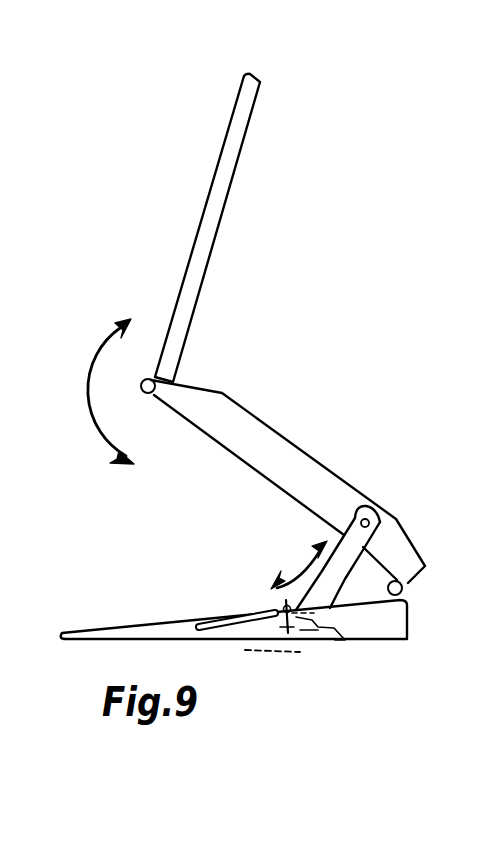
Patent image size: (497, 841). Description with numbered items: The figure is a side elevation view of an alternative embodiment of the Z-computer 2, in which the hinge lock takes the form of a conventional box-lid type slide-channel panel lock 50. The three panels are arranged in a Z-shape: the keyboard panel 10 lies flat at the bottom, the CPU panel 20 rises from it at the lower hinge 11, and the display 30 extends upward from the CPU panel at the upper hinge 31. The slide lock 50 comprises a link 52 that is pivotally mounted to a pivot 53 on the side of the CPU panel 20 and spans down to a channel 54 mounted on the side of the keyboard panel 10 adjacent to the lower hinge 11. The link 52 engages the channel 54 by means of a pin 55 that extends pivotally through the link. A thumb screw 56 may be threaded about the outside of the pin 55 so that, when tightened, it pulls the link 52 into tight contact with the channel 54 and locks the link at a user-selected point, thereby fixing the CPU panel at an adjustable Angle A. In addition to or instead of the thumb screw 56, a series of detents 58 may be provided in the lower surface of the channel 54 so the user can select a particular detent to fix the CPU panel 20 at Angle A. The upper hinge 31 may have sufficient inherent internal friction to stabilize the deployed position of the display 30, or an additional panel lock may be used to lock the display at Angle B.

The Z-computer 2 is at (249, 369).
The keyboard panel 10 is at (153, 619).
The lower hinge 11 is at (404, 588).
The CPU panel 20 is at (286, 471).
The display 30 is at (215, 235).
The upper hinge 31 is at (141, 386).
The slide-channel type panel lock 50 is at (303, 528).
The link 52 is at (355, 553).
The pivot 53 is at (366, 518).
The channel 54 is at (240, 619).
The pin 55 is at (283, 632).
The thumb screw 56 is at (297, 642).
The detents 58 is at (334, 640).
The Angle A is at (299, 565).
The Angle B is at (83, 407).